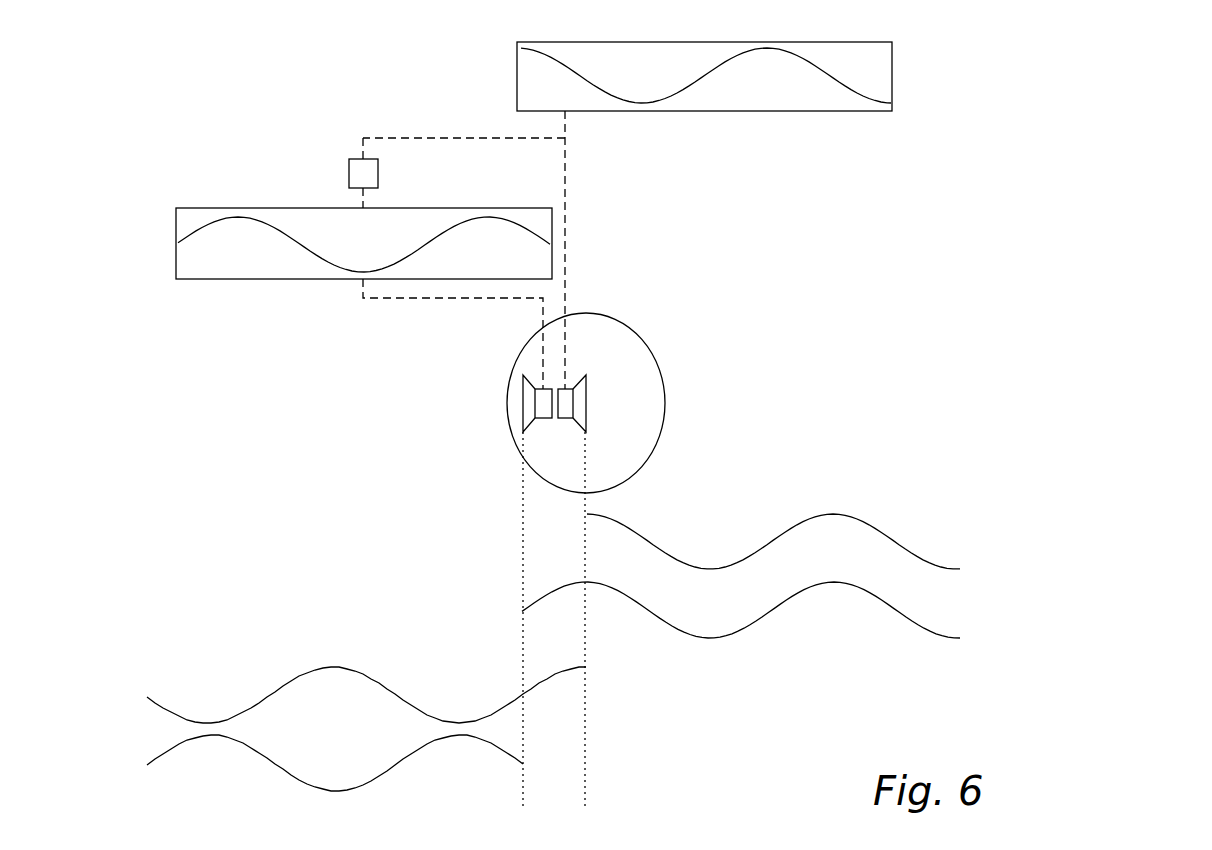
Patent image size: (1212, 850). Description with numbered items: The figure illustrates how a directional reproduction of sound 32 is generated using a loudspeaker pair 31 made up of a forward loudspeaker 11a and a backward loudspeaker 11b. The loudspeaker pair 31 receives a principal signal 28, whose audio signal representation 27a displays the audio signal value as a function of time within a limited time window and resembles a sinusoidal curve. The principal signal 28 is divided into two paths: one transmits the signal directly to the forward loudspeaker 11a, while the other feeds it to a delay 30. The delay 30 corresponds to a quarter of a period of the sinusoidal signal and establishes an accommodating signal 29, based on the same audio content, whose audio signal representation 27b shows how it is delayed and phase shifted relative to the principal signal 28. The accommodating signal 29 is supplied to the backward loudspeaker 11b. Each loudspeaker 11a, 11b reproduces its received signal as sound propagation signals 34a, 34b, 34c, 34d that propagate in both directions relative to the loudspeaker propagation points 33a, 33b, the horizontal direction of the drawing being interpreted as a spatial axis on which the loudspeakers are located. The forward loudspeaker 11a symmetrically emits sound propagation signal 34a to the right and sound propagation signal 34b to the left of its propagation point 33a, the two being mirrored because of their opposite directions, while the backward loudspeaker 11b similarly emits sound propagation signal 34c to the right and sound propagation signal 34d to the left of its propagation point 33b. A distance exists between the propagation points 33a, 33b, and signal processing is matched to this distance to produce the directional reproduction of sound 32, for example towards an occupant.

The forward loudspeaker 11a is at (586, 404).
The backward loudspeaker 11b is at (523, 420).
The audio signal representation 27a is at (830, 111).
The audio signal representation 27b is at (237, 280).
The principal signal 28 is at (565, 178).
The accommodating signal 29 is at (402, 298).
The delay 30 is at (349, 177).
The loudspeaker pair 31 is at (469, 497).
The directional reproduction of sound 32 is at (665, 418).
The loudspeaker propagation point 33a is at (585, 798).
The loudspeaker propagation point 33b is at (520, 796).
The sound propagation signal 34a is at (885, 530).
The sound propagation signal 34b is at (162, 703).
The sound propagation signal 34c is at (867, 593).
The sound propagation signal 34d is at (245, 745).